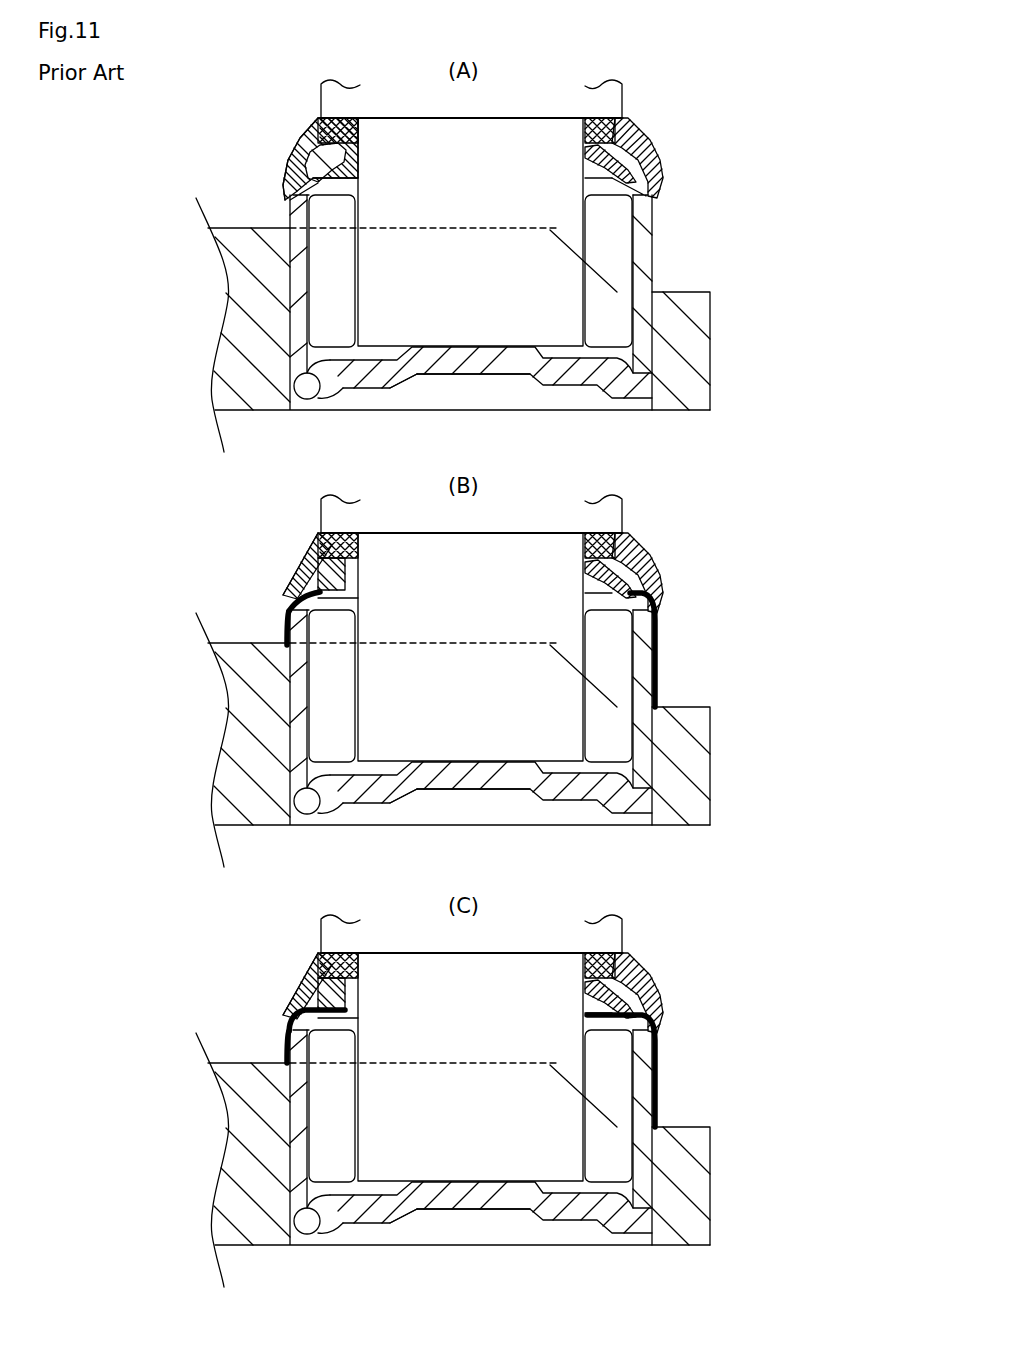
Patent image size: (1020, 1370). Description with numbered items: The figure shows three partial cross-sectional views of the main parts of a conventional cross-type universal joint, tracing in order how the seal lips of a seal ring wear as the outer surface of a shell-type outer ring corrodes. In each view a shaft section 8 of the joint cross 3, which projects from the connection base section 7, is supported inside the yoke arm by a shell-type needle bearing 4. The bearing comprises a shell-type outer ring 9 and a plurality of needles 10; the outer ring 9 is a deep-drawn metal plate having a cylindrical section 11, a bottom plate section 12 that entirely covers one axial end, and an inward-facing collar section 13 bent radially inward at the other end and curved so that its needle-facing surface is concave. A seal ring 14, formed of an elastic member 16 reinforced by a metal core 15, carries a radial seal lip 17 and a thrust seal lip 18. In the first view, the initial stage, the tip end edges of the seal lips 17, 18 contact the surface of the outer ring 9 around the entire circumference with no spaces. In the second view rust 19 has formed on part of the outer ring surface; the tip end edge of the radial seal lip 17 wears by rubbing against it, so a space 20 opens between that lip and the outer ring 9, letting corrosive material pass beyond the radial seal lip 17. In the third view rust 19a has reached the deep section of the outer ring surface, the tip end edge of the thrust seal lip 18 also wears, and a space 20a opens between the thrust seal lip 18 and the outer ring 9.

In FIG. 11A, the joint cross 3 is at (590, 92).
In FIG. 11B, the joint cross 3 is at (489, 512).
In FIG. 11C, the joint cross 3 is at (489, 932).
In FIG. 11A, the shell-type needle bearing 4 is at (540, 392).
In FIG. 11B, the shell-type needle bearing 4 is at (491, 819).
In FIG. 11C, the shell-type needle bearing 4 is at (491, 1239).
In FIG. 11A, the connection base section 7 is at (600, 128).
In FIG. 11B, the connection base section 7 is at (626, 538).
In FIG. 11C, the connection base section 7 is at (626, 958).
In FIG. 11A, the shaft section 8 is at (515, 244).
In FIG. 11B, the shaft section 8 is at (493, 647).
In FIG. 11C, the shaft section 8 is at (493, 1067).
In FIG. 11A, the shell-type outer ring 9 is at (414, 392).
In FIG. 11B, the shell-type outer ring 9 is at (403, 827).
In FIG. 11C, the shell-type outer ring 9 is at (403, 1247).
In FIG. 11A, the needle 10 is at (330, 315).
In FIG. 11B, the needle 10 is at (461, 686).
In FIG. 11C, the needle 10 is at (461, 1106).
In FIG. 11A, the cylindrical section 11 is at (650, 330).
In FIG. 11B, the cylindrical section 11 is at (711, 717).
In FIG. 11C, the cylindrical section 11 is at (711, 1137).
In FIG. 11A, the bottom plate section 12 is at (494, 380).
In FIG. 11B, the bottom plate section 12 is at (473, 825).
In FIG. 11C, the bottom plate section 12 is at (473, 1245).
In FIG. 11A, the inward-facing collar section 13 is at (295, 190).
In FIG. 11B, the inward-facing collar section 13 is at (470, 559).
In FIG. 11C, the inward-facing collar section 13 is at (561, 969).
In FIG. 11A, the seal ring 14 is at (303, 136).
In FIG. 11B, the seal ring 14 is at (298, 547).
In FIG. 11C, the seal ring 14 is at (298, 967).
In FIG. 11A, the metal core 15 is at (340, 126).
In FIG. 11B, the metal core 15 is at (358, 531).
In FIG. 11C, the metal core 15 is at (358, 951).
In FIG. 11A, the elastic member 16 is at (285, 158).
In FIG. 11B, the elastic member 16 is at (269, 556).
In FIG. 11C, the elastic member 16 is at (269, 976).
In FIG. 11A, the radial seal lip 17 is at (650, 152).
In FIG. 11B, the radial seal lip 17 is at (670, 573).
In FIG. 11C, the radial seal lip 17 is at (670, 993).
In FIG. 11A, the thrust seal lip 18 is at (658, 183).
In FIG. 11B, the thrust seal lip 18 is at (655, 586).
In FIG. 11C, the thrust seal lip 18 is at (655, 1006).
In FIG. 11B, the rust 19 is at (218, 615).
In FIG. 11C, the rust 19a is at (212, 1033).
In FIG. 11B, the space 20 is at (427, 631).
In FIG. 11C, the space 20 is at (427, 1054).
In FIG. 11C, the space 20a is at (470, 980).